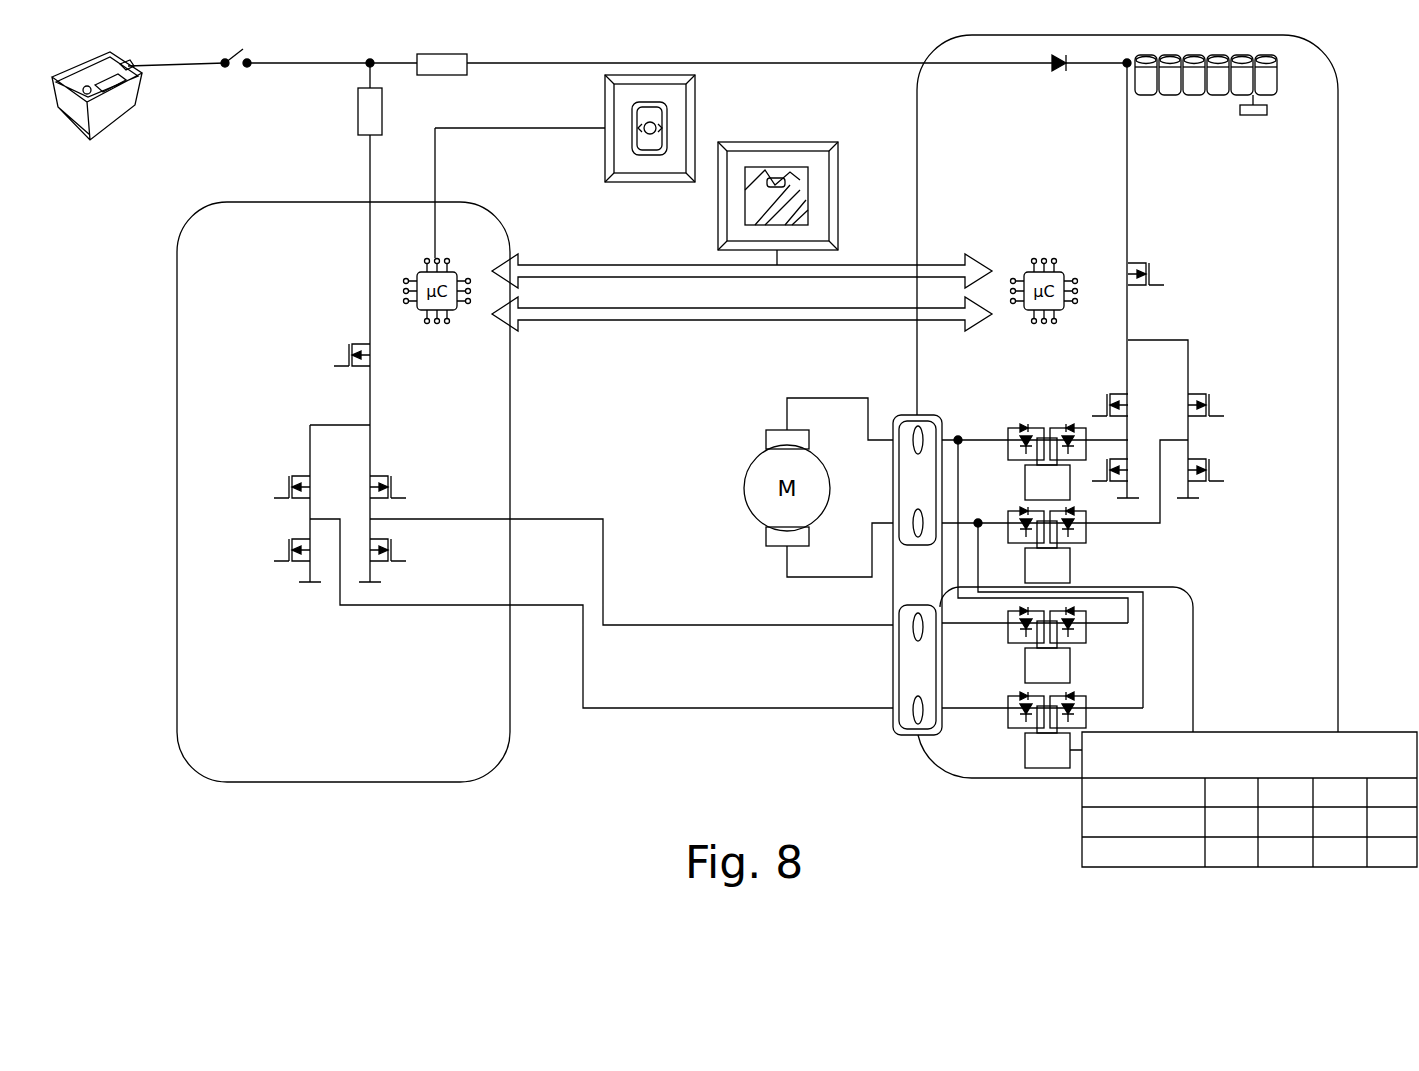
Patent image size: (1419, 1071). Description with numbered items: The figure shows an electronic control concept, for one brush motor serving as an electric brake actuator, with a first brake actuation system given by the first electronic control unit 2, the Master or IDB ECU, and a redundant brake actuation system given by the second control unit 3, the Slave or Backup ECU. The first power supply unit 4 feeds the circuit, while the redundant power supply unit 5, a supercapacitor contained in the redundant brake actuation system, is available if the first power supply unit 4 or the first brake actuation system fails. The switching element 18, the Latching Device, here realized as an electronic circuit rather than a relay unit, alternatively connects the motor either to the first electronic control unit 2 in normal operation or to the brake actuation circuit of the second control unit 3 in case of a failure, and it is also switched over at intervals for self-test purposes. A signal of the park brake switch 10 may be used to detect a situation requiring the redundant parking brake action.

The first electronic control unit 2 is at (510, 722).
The second control unit 3 is at (1338, 242).
The first power supply unit 4 is at (118, 112).
The redundant power supply unit 5 is at (1215, 97).
The park brake switch 10 is at (695, 100).
The switching element 18 is at (1195, 642).